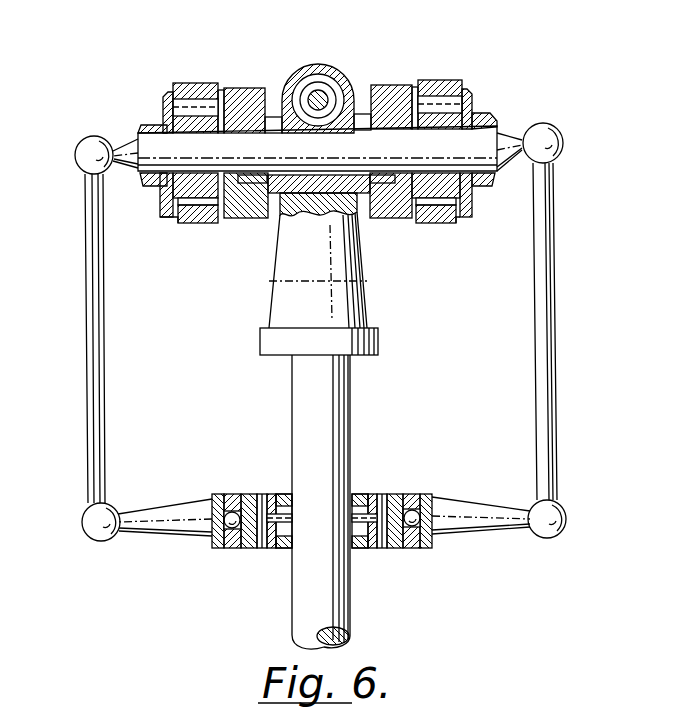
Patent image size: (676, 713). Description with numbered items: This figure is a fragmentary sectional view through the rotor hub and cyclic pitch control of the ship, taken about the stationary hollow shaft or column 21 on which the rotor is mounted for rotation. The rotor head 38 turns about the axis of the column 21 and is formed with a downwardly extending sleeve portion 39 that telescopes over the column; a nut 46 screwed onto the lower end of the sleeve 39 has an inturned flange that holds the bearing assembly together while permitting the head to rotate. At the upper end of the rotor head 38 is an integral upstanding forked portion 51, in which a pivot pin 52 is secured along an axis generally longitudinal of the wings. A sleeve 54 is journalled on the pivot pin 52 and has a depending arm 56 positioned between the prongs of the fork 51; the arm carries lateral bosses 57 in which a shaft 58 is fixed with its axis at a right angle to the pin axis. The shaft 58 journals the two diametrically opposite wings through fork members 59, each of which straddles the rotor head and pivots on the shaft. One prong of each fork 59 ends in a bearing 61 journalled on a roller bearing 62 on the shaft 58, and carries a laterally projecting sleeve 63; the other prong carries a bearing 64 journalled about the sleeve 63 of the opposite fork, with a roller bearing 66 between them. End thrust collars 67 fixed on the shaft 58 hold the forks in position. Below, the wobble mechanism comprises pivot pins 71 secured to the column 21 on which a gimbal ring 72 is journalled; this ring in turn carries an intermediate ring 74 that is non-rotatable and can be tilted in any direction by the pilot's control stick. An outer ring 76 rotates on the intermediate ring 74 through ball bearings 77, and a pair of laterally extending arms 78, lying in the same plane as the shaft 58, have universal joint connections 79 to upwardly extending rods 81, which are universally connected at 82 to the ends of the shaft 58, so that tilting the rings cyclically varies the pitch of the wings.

The hollow shaft or column 21 is at (297, 611).
The rotor head 38 is at (293, 247).
The sleeve portion 39 is at (287, 267).
The nut 46 is at (273, 342).
The forked portion 51 is at (356, 197).
The pivot pin 52 is at (320, 103).
The sleeve 54 is at (307, 66).
The depending arm 56 is at (267, 188).
The lateral bosses 57 is at (273, 120).
The shaft 58 is at (470, 137).
The fork member 59 is at (178, 220).
The bearing 61 is at (243, 92).
The roller bearing 62 is at (252, 181).
The sleeve 63 is at (170, 126).
The bearing 64 is at (195, 225).
The roller bearing 66 is at (195, 102).
The end thrust collars 67 is at (165, 102).
The pivot pins 71 is at (273, 513).
The gimbal ring 72 is at (372, 492).
The intermediate ring 74 is at (252, 548).
The outer ring 76 is at (213, 547).
The ball bearings 77 is at (227, 518).
The laterally extending arms 78 is at (157, 525).
The universal joint connections 79 is at (88, 522).
The rods 81 is at (90, 353).
The universal connection 82 is at (92, 155).